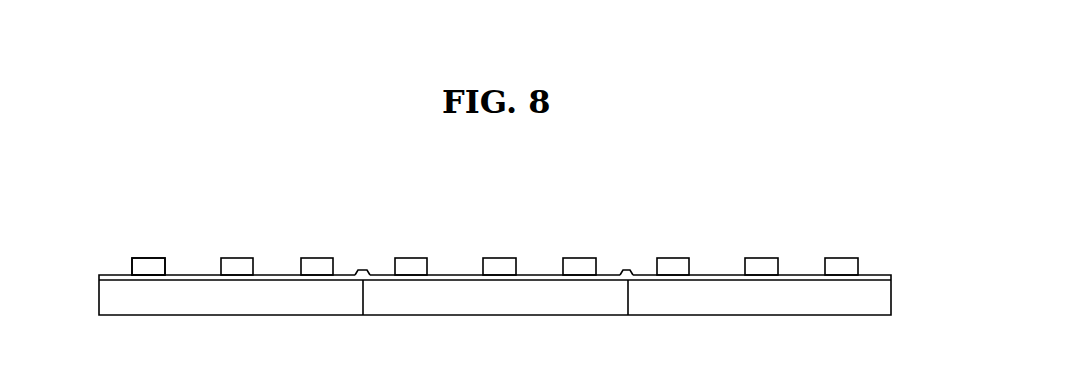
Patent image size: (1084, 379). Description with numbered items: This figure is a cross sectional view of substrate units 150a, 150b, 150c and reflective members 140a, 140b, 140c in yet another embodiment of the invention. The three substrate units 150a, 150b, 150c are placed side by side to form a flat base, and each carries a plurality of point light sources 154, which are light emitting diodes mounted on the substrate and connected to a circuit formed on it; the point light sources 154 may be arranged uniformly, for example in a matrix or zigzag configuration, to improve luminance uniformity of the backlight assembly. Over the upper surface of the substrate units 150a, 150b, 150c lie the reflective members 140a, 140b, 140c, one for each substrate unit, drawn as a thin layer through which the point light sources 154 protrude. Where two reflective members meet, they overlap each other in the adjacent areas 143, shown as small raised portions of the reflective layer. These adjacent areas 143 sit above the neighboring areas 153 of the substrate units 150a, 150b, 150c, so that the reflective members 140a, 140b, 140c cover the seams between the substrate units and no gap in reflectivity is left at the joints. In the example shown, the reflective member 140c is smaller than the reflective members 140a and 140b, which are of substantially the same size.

The point light source 154 is at (150, 262).
The reflective member 140a is at (197, 274).
The reflective member 140b is at (542, 274).
The reflective member 140c is at (711, 274).
The adjacent area 143 is at (360, 268).
The substrate unit 150a is at (238, 298).
The substrate unit 150b is at (501, 298).
The substrate unit 150c is at (757, 298).
The neighboring area 153 is at (364, 302).